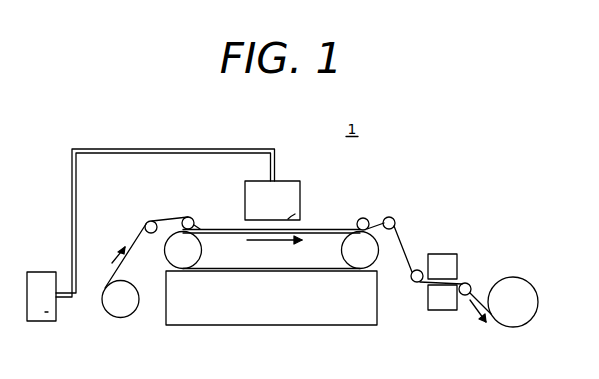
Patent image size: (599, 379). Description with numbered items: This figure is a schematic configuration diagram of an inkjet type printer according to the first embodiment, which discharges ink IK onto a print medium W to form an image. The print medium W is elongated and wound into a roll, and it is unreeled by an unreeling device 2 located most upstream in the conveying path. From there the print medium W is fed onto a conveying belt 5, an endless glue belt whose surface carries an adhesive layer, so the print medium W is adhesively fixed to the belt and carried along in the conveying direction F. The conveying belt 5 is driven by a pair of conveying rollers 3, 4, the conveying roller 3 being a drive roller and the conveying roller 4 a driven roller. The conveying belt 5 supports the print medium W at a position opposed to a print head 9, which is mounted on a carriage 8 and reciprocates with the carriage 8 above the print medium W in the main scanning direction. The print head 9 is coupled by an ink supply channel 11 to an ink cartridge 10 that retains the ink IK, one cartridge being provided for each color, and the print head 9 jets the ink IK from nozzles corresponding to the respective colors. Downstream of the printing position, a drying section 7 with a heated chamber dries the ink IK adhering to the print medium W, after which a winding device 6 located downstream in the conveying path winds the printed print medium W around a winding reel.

The unreeling device 2 is at (135, 312).
The conveying roller 3 is at (202, 249).
The conveying roller 4 is at (374, 261).
The conveying belt 5 is at (277, 271).
The winding device 6 is at (512, 327).
The drying section 7 is at (465, 262).
The carriage 8 is at (300, 189).
The print head 9 is at (291, 218).
The ink cartridge 10 is at (42, 272).
The ink supply channel 11 is at (72, 186).
The ink IK is at (45, 312).
The print medium W is at (160, 222).
The conveying direction F is at (293, 282).